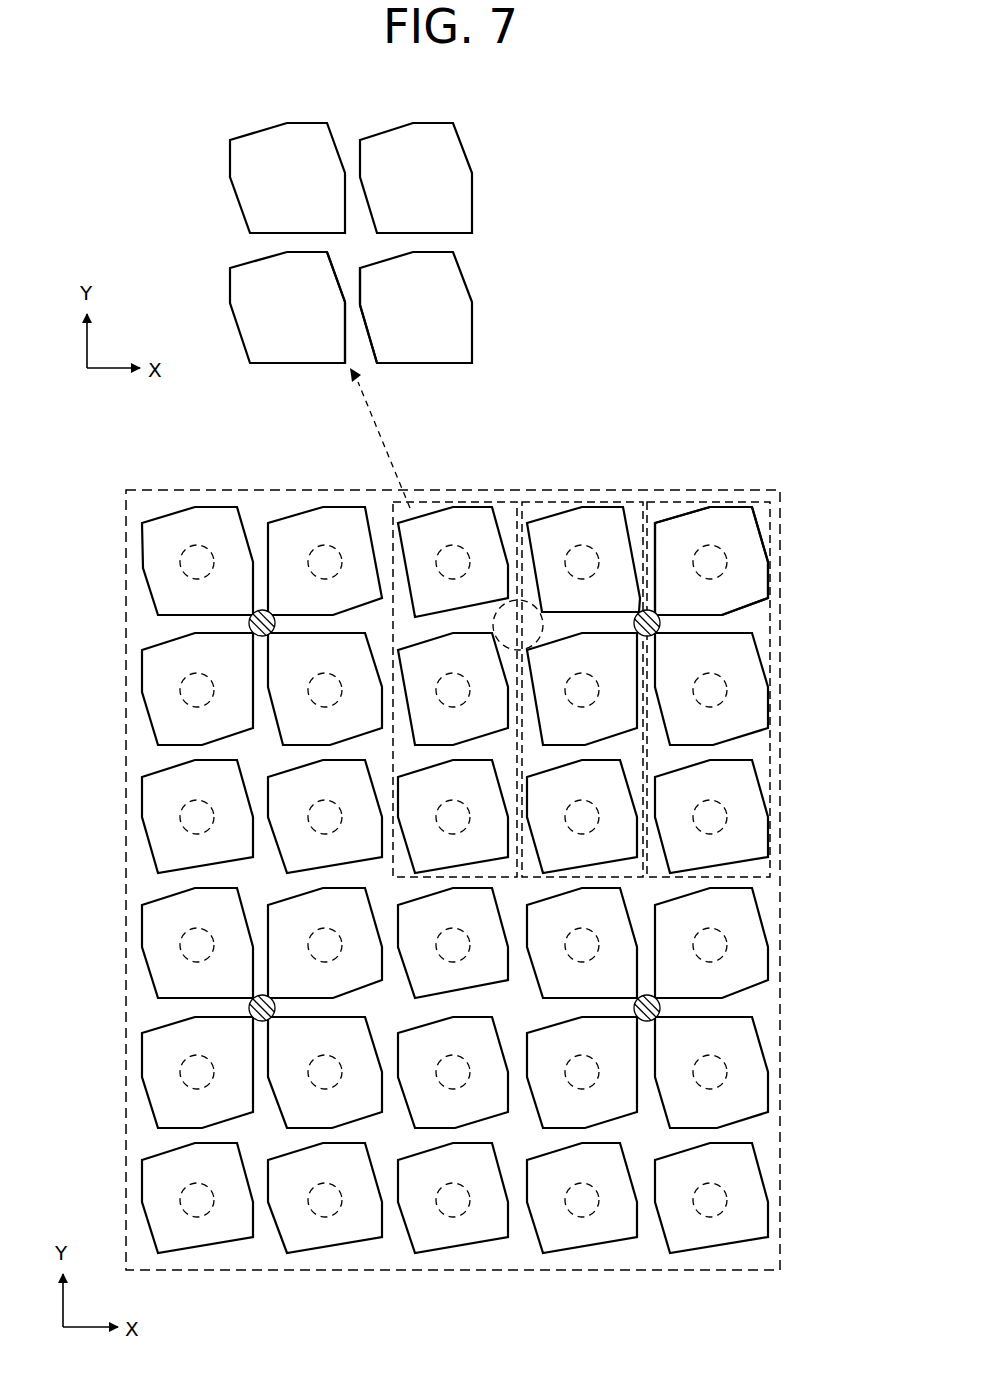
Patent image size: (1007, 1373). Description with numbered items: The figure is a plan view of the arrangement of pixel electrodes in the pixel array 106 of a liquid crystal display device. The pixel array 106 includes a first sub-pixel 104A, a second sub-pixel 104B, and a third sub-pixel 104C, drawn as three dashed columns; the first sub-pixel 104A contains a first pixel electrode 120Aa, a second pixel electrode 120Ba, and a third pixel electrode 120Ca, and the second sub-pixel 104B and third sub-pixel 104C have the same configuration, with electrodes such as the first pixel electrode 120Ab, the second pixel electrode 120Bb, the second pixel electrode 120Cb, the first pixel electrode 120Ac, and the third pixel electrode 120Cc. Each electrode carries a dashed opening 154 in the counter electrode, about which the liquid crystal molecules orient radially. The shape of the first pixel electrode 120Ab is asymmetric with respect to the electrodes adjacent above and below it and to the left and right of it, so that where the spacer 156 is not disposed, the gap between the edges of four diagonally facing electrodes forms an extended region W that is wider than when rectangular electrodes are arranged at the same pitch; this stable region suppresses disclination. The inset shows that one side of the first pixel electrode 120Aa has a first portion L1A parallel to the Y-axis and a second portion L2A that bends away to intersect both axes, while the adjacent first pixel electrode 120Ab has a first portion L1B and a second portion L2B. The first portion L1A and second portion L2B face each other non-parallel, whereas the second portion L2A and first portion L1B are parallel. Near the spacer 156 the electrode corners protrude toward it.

The pixel array 106 is at (178, 488).
The first sub-pixel 104A is at (513, 500).
The second sub-pixel 104B is at (637, 498).
The third sub-pixel 104C is at (767, 498).
The opening 154 is at (453, 545).
The spacer 156 is at (255, 614).
The region W is at (538, 600).
The second pixel electrode 120Ba is at (230, 163).
The second pixel electrode 120Bb is at (455, 148).
The first pixel electrode 120Aa is at (230, 305).
The first pixel electrode 120Ab is at (455, 276).
The first pixel electrode 120Ac is at (738, 736).
The third pixel electrode 120Ca is at (483, 864).
The second pixel electrode 120Cb is at (612, 864).
The third pixel electrode 120Cc is at (738, 864).
The first portion L1A is at (345, 345).
The second portion L2A is at (340, 278).
The first portion L1B is at (360, 280).
The second portion L2B is at (362, 326).